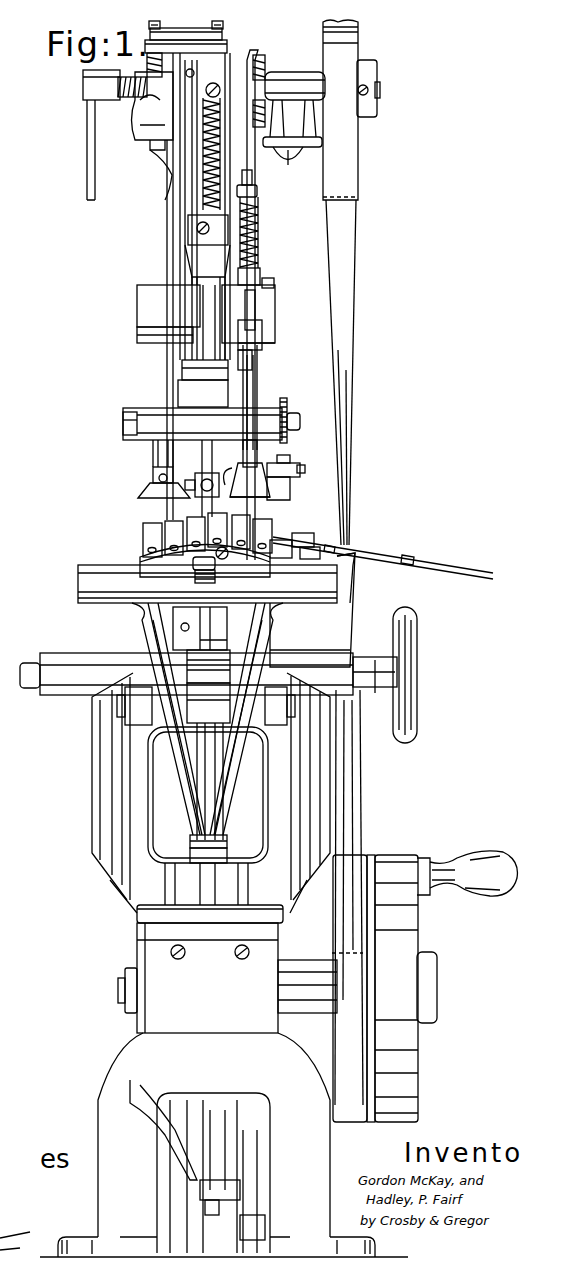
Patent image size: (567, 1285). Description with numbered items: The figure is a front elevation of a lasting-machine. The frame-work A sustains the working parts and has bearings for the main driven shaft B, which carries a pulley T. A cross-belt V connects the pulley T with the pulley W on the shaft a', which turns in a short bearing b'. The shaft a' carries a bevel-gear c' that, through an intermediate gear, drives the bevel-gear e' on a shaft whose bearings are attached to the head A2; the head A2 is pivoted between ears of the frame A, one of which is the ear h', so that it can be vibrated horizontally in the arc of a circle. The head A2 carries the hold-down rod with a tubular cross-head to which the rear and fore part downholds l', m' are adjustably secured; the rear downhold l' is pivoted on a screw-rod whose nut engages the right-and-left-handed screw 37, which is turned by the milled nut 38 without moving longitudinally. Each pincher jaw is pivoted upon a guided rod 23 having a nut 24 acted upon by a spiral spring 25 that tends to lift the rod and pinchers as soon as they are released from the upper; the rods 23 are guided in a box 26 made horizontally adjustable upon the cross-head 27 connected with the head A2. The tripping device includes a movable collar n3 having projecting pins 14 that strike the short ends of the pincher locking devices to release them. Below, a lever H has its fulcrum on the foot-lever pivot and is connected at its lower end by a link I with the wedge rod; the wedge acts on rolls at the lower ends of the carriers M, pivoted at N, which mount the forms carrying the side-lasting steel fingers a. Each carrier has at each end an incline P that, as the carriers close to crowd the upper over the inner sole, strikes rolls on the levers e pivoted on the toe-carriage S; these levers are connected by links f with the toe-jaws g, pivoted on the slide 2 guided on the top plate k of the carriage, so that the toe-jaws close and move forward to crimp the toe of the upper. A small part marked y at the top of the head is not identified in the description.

The cap plate y is at (184, 53).
The head A2 is at (182, 202).
The bevel-gear e' is at (128, 126).
The bevel-gear c' is at (263, 295).
The short bearing b' is at (294, 109).
The shaft a' is at (377, 88).
The pulley W is at (365, 180).
The nut 24 is at (256, 192).
The spiral spring 25 is at (258, 212).
The cross-head 27 is at (168, 314).
The box 26 is at (260, 308).
The guided rod 23 is at (247, 327).
The projecting pins 14 is at (244, 373).
The movable collar n3 is at (203, 383).
The ear h' is at (202, 413).
The milled nut 38 is at (287, 404).
The right-and-left-handed screw 37 is at (300, 423).
The rear-part downhold l' is at (157, 470).
The fore-part downhold m' is at (264, 470).
The steel fingers a is at (207, 535).
The incline P is at (205, 564).
The toe-jaws g is at (281, 534).
The links f is at (300, 540).
The slide 2 is at (360, 540).
The carriers M is at (82, 585).
The top plate k is at (356, 560).
The levers e is at (358, 584).
The toe-carriage S is at (312, 610).
The cross-belt V is at (355, 815).
The pivot N is at (123, 712).
The frame-work A is at (224, 965).
The main driven shaft B is at (122, 992).
The link I is at (215, 1190).
The lever H is at (212, 1216).
The pulley T is at (338, 955).